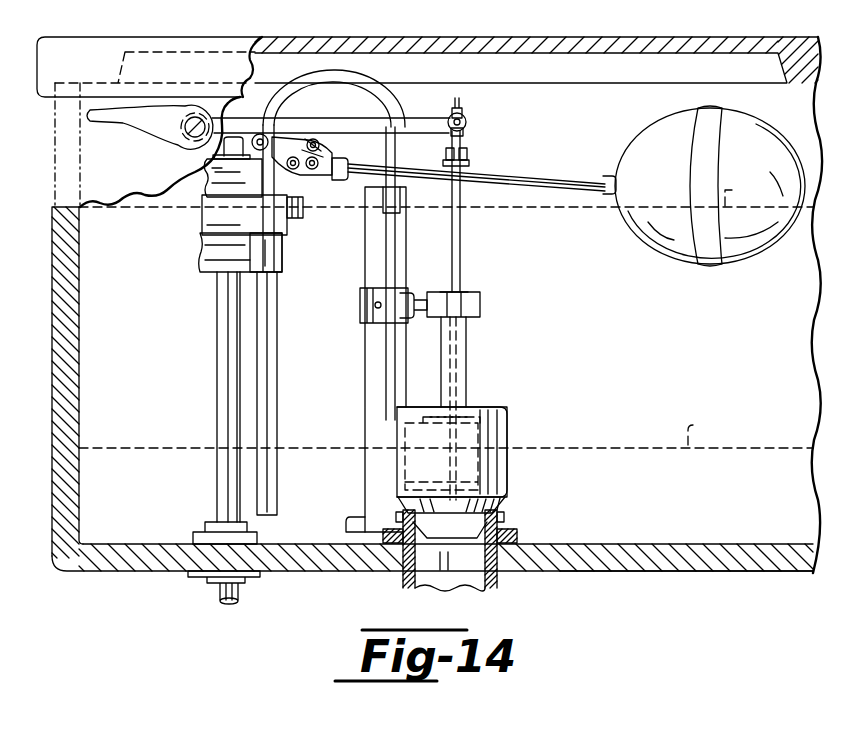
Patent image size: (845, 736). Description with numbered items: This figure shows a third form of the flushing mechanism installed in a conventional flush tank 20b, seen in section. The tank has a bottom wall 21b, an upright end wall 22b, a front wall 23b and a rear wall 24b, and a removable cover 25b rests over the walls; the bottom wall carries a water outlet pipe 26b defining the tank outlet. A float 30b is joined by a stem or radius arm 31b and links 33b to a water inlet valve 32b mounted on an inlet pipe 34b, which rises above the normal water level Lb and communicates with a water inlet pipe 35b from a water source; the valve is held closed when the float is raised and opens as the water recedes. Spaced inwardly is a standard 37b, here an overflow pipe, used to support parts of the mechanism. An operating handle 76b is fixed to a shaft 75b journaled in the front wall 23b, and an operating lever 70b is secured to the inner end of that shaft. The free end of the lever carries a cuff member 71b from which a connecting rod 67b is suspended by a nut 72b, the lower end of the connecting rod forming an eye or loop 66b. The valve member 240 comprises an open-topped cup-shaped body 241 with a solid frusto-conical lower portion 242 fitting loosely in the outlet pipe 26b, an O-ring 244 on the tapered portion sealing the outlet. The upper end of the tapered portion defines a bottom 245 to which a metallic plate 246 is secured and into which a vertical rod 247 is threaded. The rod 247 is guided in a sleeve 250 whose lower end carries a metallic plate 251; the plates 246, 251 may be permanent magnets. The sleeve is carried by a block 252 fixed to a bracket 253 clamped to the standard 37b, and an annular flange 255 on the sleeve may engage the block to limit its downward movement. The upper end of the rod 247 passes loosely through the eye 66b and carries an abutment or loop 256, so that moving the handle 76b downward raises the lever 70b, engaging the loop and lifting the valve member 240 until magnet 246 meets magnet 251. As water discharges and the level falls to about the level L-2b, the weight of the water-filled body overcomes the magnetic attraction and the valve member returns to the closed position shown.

The flush tank 20b is at (371, 572).
The bottom wall 21b is at (600, 572).
The end wall 22b is at (78, 385).
The front wall 23b is at (97, 195).
The rear wall 24b is at (680, 348).
The cover 25b is at (505, 37).
The water outlet pipe 26b is at (467, 582).
The float 30b is at (674, 180).
The stem or radius arm 31b is at (579, 183).
The water inlet valve 32b is at (212, 168).
The links 33b is at (320, 135).
The inlet pipe 34b is at (218, 383).
The water inlet pipe 35b is at (227, 596).
The standard 37b is at (368, 366).
The eye or loop 66b is at (470, 165).
The connecting rod 67b is at (466, 134).
The operating lever 70b is at (347, 120).
The cuff member 71b is at (472, 112).
The nut 72b is at (452, 110).
The shaft 75b is at (185, 130).
The operating handle 76b is at (130, 117).
The valve member 240 is at (509, 485).
The cup-shaped body 241 is at (508, 427).
The tapered lower portion 242 is at (500, 502).
The O-ring 244 is at (450, 542).
The bottom 245 is at (413, 490).
The metallic plate 246 is at (440, 472).
The rod 247 is at (462, 238).
The sleeve 250 is at (470, 336).
The metallic plate 251 is at (480, 412).
The block 252 is at (481, 304).
The bracket 253 is at (385, 322).
The annular flange 255 is at (470, 290).
The abutment or loop 256 is at (470, 155).
The normal water level Lb is at (740, 194).
The receded water level L-2b is at (709, 431).